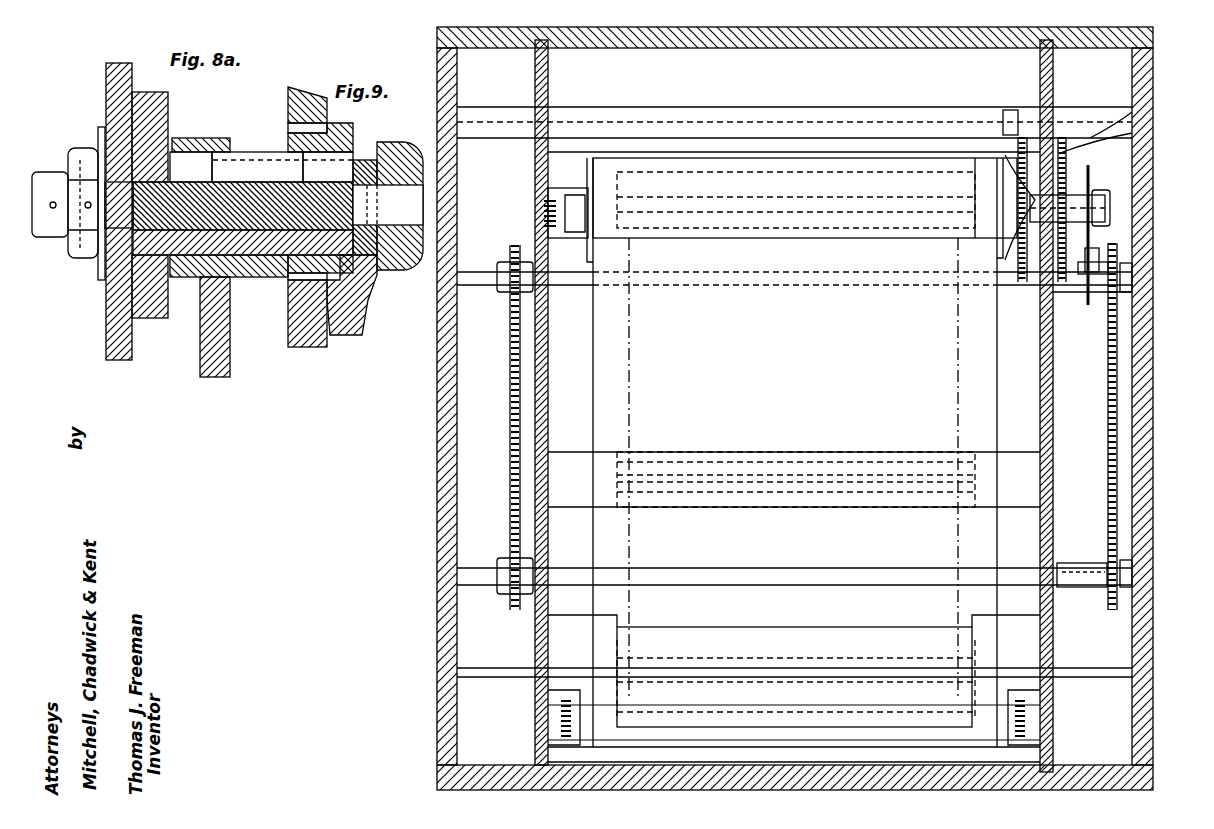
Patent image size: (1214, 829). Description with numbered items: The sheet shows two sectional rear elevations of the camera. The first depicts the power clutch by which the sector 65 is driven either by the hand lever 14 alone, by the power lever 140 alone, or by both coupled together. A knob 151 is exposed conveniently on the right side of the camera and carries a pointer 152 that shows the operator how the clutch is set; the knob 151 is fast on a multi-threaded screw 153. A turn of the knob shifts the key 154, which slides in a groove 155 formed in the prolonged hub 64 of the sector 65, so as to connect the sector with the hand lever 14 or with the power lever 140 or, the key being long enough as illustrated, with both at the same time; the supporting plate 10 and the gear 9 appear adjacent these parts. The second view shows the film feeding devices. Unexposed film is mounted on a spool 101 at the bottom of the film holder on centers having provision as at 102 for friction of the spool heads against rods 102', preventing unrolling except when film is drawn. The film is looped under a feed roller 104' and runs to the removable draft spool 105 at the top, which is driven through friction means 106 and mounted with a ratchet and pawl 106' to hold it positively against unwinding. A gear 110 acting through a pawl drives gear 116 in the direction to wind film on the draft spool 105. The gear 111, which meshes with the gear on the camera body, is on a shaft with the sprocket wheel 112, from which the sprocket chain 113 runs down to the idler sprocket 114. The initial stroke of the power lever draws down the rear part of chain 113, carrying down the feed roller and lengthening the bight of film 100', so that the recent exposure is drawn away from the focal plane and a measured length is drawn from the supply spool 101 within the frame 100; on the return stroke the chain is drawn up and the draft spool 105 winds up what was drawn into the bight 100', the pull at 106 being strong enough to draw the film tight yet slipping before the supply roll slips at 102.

In FIG. 8A, the plate 10 is at (106, 330).
In FIG. 8A, the sector 65 is at (152, 300).
In FIG. 8A, the multi-threaded screw 153 is at (280, 215).
In FIG. 8A, the key 154 is at (262, 170).
In FIG. 8A, the groove 155 is at (218, 168).
In FIG. 8A, the gear 9 is at (310, 335).
In FIG. 8A, the hand lever 14 is at (365, 250).
In FIG. 8A, the knob 151 is at (410, 272).
In FIG. 8A, the pointer 152 is at (352, 322).
In FIG. 8A, the prolonged hub 64 is at (280, 250).
In FIG. 8A, the power lever 140 is at (235, 340).
In FIG. 9, the frame 100 is at (795, 408).
In FIG. 9, the bight of film 100' is at (814, 278).
In FIG. 9, the spool 101 is at (590, 650).
In FIG. 9, the friction provision 102 is at (794, 718).
In FIG. 9, the rods 102' is at (794, 692).
In FIG. 9, the feed roller 104' is at (822, 469).
In FIG. 9, the draft spool 105 is at (548, 172).
In FIG. 9, the friction means 106 is at (1132, 207).
In FIG. 9, the ratchet and pawl 106' is at (985, 182).
In FIG. 9, the gear 110 is at (1085, 198).
In FIG. 9, the gear 111 is at (1092, 305).
In FIG. 9, the sprocket wheel 112 is at (1100, 268).
In FIG. 9, the sprocket chain 113 is at (1118, 418).
In FIG. 9, the idler sprocket 114 is at (1122, 582).
In FIG. 9, the gear 116 is at (1090, 150).